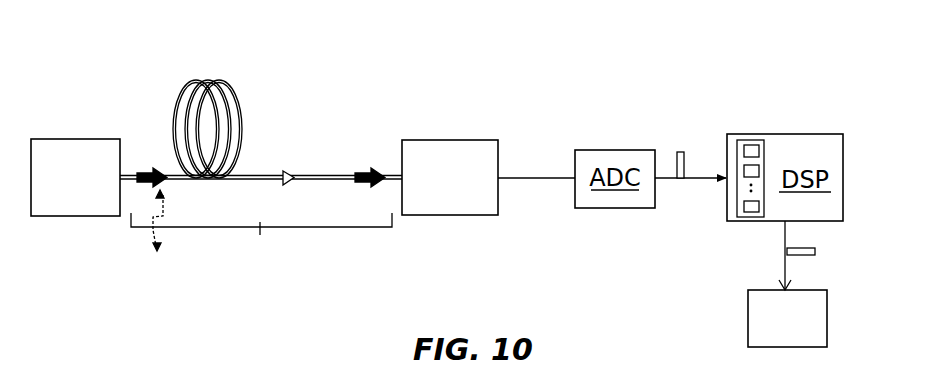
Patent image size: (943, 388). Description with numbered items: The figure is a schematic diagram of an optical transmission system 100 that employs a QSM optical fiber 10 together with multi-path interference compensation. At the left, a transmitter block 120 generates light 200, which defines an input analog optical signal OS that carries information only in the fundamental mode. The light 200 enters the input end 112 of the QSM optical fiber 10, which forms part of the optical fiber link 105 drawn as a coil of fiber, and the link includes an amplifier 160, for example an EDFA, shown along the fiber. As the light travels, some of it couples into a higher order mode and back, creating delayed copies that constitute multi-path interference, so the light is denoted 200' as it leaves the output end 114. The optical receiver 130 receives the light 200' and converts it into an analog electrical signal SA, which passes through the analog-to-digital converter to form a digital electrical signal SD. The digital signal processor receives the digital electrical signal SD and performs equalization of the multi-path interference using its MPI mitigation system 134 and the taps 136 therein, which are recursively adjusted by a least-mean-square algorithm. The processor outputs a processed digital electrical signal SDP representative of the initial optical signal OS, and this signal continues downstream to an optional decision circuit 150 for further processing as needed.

The optical transmission system 100 is at (144, 38).
The QSM optical fiber 10 is at (261, 219).
The transmitter 120 is at (97, 189).
The light 200 is at (138, 125).
The input end 112 is at (125, 172).
The optical fiber link 105 is at (257, 79).
The amplifier 160 is at (288, 171).
The light at output end 200' is at (387, 120).
The output end 114 is at (389, 173).
The optical receiver 130 is at (429, 190).
The analog electrical signal SA is at (552, 192).
The digital electrical signal SD is at (678, 152).
The MPI mitigation system 134 is at (749, 146).
The taps 136 is at (758, 153).
The processed digital electrical signal SDP is at (815, 252).
The decision circuit 150 is at (766, 326).
The input analog optical signal OS is at (163, 258).